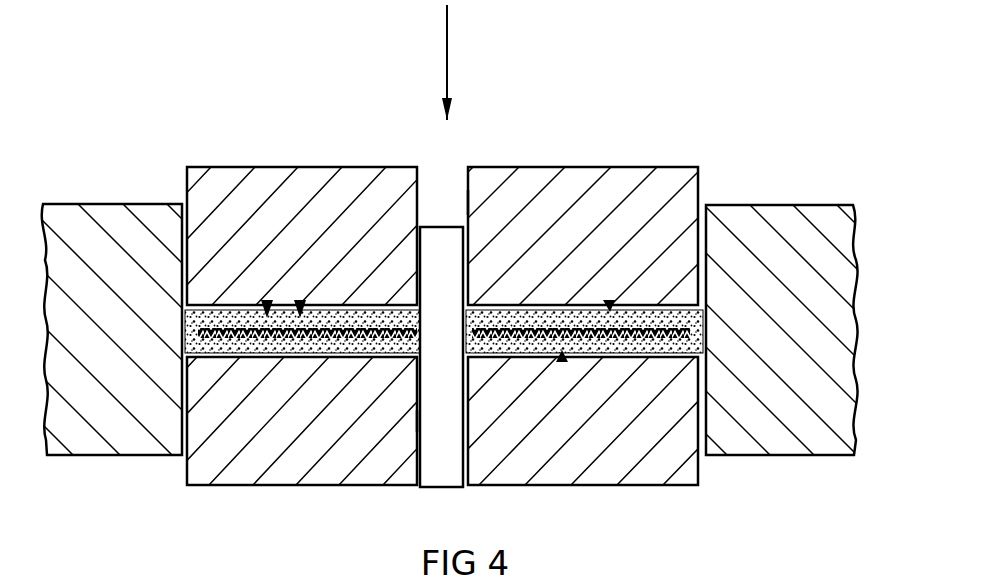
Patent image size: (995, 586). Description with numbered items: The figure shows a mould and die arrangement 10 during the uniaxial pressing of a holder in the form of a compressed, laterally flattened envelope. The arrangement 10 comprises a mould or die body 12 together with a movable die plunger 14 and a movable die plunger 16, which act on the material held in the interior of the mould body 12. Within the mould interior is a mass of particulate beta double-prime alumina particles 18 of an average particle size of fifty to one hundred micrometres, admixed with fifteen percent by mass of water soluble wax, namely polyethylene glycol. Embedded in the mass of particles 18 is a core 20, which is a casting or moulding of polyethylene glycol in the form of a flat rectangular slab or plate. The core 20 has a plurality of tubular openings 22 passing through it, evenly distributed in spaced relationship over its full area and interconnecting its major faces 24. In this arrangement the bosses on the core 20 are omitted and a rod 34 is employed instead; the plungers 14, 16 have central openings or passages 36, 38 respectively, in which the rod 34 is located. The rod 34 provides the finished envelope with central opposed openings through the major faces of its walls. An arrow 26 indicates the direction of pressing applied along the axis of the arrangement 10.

The mould and die arrangement 10 is at (641, 47).
The mould or die body 12 is at (128, 435).
The movable die plunger 14 is at (312, 189).
The movable die plunger 16 is at (607, 435).
The mass of particulate beta''-alumina particles 18 is at (292, 343).
The core 20 is at (371, 330).
The tubular openings 22 is at (300, 304).
The major faces 24 is at (610, 304).
The applied force 26 is at (450, 40).
The rod 34 is at (432, 451).
The central opening or passage 36 is at (486, 203).
The central opening or passage 38 is at (406, 421).